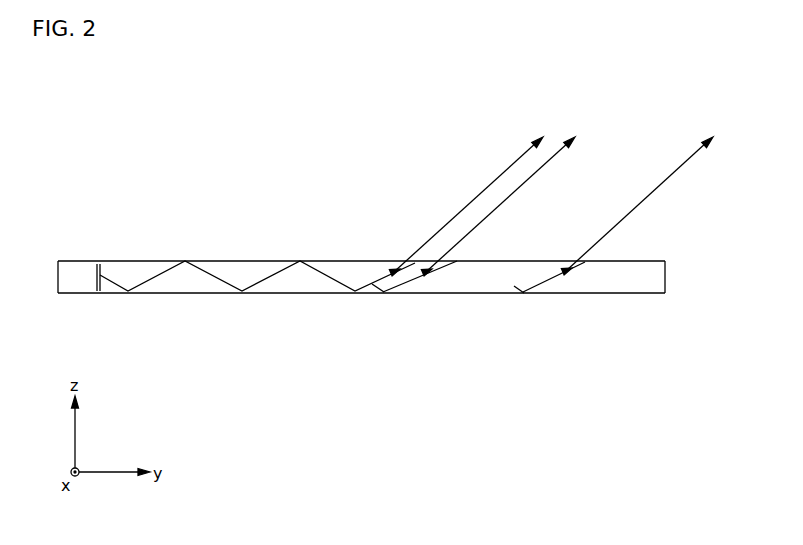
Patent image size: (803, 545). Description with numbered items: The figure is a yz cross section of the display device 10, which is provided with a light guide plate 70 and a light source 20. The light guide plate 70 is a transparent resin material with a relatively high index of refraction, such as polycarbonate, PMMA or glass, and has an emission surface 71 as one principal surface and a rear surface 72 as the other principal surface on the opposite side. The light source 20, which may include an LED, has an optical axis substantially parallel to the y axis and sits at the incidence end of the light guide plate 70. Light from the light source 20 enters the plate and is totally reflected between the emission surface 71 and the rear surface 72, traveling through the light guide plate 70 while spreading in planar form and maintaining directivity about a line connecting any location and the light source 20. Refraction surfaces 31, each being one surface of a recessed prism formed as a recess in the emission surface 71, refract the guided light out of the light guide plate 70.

The display device 10 is at (630, 74).
The light source 20 is at (67, 261).
The refraction surface 31 is at (572, 266).
The light guide plate 70 is at (393, 276).
The emission surface 71 is at (614, 261).
The rear surface 72 is at (617, 293).